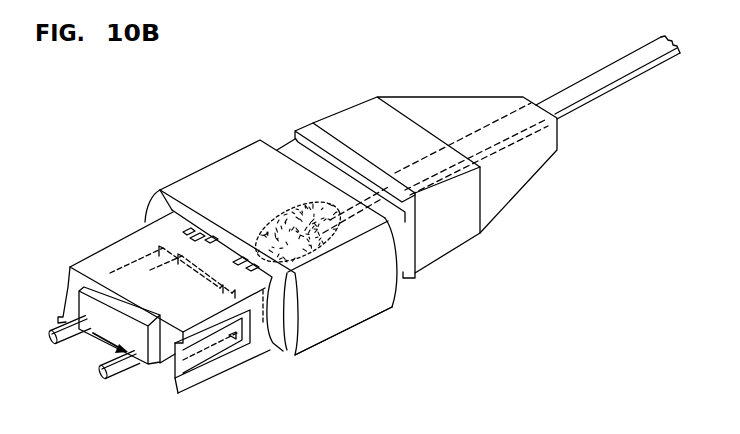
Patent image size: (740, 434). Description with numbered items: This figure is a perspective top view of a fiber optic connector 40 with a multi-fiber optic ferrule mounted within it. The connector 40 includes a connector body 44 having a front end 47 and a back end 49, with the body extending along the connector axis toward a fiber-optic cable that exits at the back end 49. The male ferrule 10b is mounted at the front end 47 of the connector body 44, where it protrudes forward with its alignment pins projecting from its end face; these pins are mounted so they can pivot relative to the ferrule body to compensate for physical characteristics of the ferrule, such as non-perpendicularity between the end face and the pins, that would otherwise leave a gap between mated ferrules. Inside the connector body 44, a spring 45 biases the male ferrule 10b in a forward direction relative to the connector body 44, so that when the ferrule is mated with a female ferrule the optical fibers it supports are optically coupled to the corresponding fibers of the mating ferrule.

The fiber optic connector 40 is at (260, 80).
The connector body 44 is at (208, 178).
The spring 45 is at (320, 252).
The front end 47 is at (62, 256).
The back end 49 is at (365, 118).
The male ferrule 10b is at (84, 361).